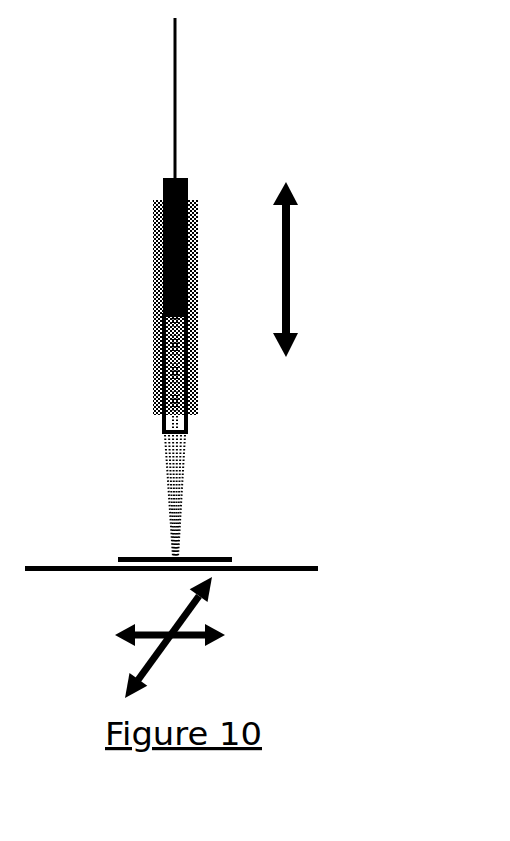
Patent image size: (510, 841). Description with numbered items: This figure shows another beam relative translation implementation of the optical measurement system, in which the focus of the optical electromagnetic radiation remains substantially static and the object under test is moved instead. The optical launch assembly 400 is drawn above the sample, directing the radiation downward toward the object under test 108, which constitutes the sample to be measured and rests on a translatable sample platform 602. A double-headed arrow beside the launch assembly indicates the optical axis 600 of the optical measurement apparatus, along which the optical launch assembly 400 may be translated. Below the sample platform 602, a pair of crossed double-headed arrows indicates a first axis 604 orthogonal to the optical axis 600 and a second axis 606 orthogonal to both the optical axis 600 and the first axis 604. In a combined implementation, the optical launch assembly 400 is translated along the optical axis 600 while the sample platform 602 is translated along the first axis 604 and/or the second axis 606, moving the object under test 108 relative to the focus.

The optical launch assembly 400 is at (155, 282).
The optical axis 600 is at (288, 260).
The object under test 108 is at (200, 558).
The sample platform 602 is at (318, 568).
The first axis 604 is at (155, 628).
The second axis 606 is at (153, 665).